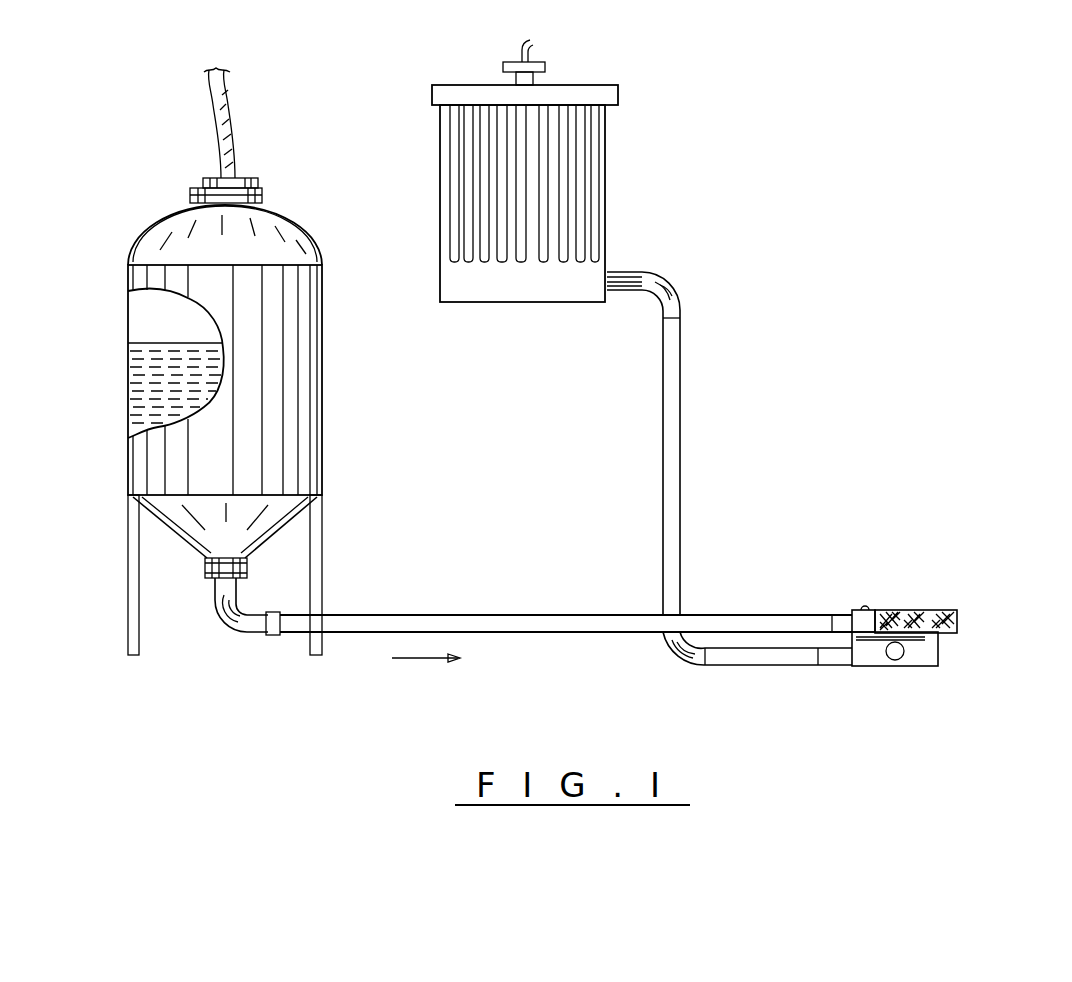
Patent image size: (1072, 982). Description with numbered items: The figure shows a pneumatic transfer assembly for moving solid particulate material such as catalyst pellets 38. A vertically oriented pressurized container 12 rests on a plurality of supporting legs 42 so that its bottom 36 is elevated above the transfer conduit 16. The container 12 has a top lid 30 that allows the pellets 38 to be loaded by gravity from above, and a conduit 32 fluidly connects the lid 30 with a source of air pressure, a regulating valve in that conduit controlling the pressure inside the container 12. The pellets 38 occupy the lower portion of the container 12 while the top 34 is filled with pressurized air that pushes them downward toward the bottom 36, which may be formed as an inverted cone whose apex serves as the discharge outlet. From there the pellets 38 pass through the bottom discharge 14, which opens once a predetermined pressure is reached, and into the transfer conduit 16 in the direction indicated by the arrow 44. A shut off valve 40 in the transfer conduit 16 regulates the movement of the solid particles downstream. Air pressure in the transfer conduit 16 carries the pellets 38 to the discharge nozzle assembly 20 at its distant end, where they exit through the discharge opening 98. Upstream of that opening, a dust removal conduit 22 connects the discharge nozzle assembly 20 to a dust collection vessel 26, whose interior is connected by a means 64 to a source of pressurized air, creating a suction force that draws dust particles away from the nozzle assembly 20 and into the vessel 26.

The pressurized container 12 is at (322, 374).
The bottom discharge 14 is at (214, 585).
The transfer conduit 16 is at (525, 614).
The discharge nozzle assembly 20 is at (905, 613).
The dust removal conduit 22 is at (683, 468).
The dust collection vessel 26 is at (607, 185).
The top lid 30 is at (248, 178).
The conduit 32 is at (228, 106).
The top 34 is at (280, 218).
The bottom 36 is at (205, 548).
The pellets 38 is at (162, 383).
The shut off valve 40 is at (272, 636).
The supporting legs 42 is at (126, 566).
The arrow 44 is at (430, 659).
The means 64 is at (532, 45).
The discharge opening 98 is at (957, 628).